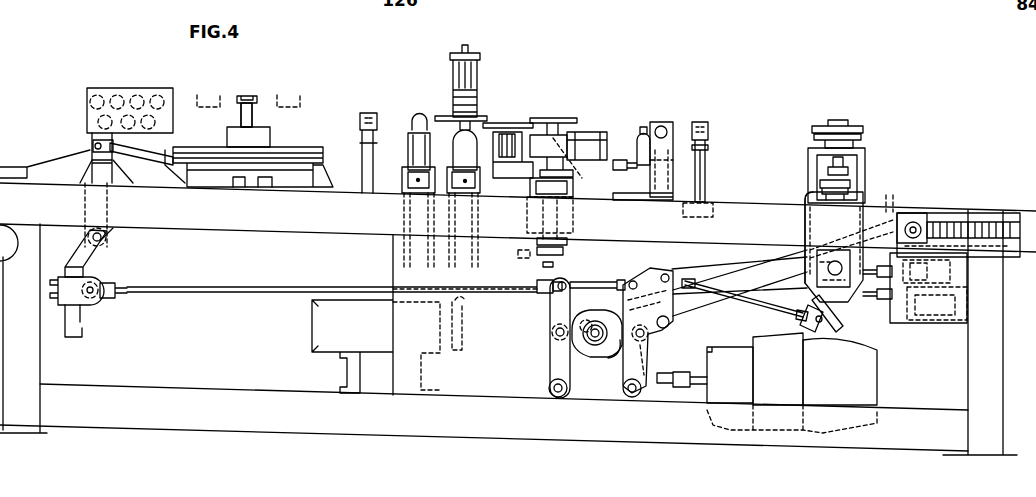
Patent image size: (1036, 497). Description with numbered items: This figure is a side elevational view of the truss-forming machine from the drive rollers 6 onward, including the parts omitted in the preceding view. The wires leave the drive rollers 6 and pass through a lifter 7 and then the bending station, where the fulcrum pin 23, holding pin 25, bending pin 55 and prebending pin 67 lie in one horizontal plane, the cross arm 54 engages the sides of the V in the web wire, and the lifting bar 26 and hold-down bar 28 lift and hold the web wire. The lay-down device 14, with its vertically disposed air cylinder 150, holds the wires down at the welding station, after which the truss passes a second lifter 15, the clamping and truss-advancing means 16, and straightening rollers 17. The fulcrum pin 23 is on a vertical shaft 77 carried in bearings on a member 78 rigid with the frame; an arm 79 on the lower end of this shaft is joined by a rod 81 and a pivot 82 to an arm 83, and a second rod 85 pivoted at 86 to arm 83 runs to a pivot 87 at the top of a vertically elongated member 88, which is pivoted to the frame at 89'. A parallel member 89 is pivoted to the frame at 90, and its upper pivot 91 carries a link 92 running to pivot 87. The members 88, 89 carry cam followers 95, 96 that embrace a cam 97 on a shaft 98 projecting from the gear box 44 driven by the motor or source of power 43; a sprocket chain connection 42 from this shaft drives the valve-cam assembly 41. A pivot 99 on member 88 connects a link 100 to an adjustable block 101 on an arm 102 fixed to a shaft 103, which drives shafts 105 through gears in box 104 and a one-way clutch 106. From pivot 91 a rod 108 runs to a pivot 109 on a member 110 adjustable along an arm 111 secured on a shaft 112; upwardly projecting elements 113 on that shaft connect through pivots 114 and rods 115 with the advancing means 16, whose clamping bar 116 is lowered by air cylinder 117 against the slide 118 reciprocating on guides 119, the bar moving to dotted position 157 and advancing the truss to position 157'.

The drive rollers 6 is at (864, 125).
The lifter 7 is at (719, 134).
The lay-down device 14 is at (450, 102).
The lifter 15 is at (388, 113).
The reciprocable clamping and truss-advancing means 16 is at (270, 91).
The straightening rollers 17 is at (157, 80).
The fulcrum pin 23 is at (554, 120).
The holding pin 25 is at (508, 122).
The lifting bar 26 is at (577, 167).
The hold-down bar 28 is at (572, 118).
The valve-cam assembly 41 is at (970, 214).
The sprocket chain connection 42 is at (887, 210).
The source of power 43 is at (766, 388).
The gear box 44 is at (662, 391).
The cross arm 54 is at (469, 146).
The bending pin 55 is at (641, 126).
The prebending pin 67 is at (648, 123).
The vertical shaft 77 is at (545, 188).
The member 78 is at (567, 233).
The arm 79 is at (540, 268).
The rod 81 is at (720, 266).
The pivot 82 is at (937, 212).
The arm 83 is at (895, 324).
The second rod 85 is at (880, 294).
The pivot 86 is at (918, 326).
The pivot 87 is at (635, 281).
The vertically elongated member 88 is at (682, 314).
The second vertically elongated member 89 is at (533, 338).
The pivot 89' is at (641, 404).
The pivot 90 is at (557, 394).
The pivot 91 is at (578, 276).
The link 92 is at (597, 280).
The cam follower 95 is at (650, 338).
The cam follower 96 is at (552, 332).
The cam 97 is at (612, 358).
The shaft 98 is at (595, 343).
The pivot 99 is at (669, 276).
The link 100 is at (785, 322).
The block 101 is at (819, 336).
The arm 102 is at (843, 346).
The shaft 103 is at (838, 252).
The box 104 is at (804, 232).
The shafts 105 is at (842, 162).
The one-way or over-running clutch 106 is at (849, 184).
The rod 108 is at (357, 286).
The pivot 109 is at (98, 283).
The member 110 is at (82, 299).
The arm 111 is at (84, 334).
The shaft 112 is at (110, 232).
The elements 113 is at (93, 168).
The pivots 114 is at (93, 147).
The rods 115 is at (160, 158).
The clamping bar 116 is at (244, 93).
The air cylinder 117 is at (265, 196).
The slide 118 is at (289, 124).
The guides 119 is at (289, 151).
The air cylinder 150 is at (472, 76).
The dotted position 157 is at (303, 81).
The position 157' is at (197, 83).